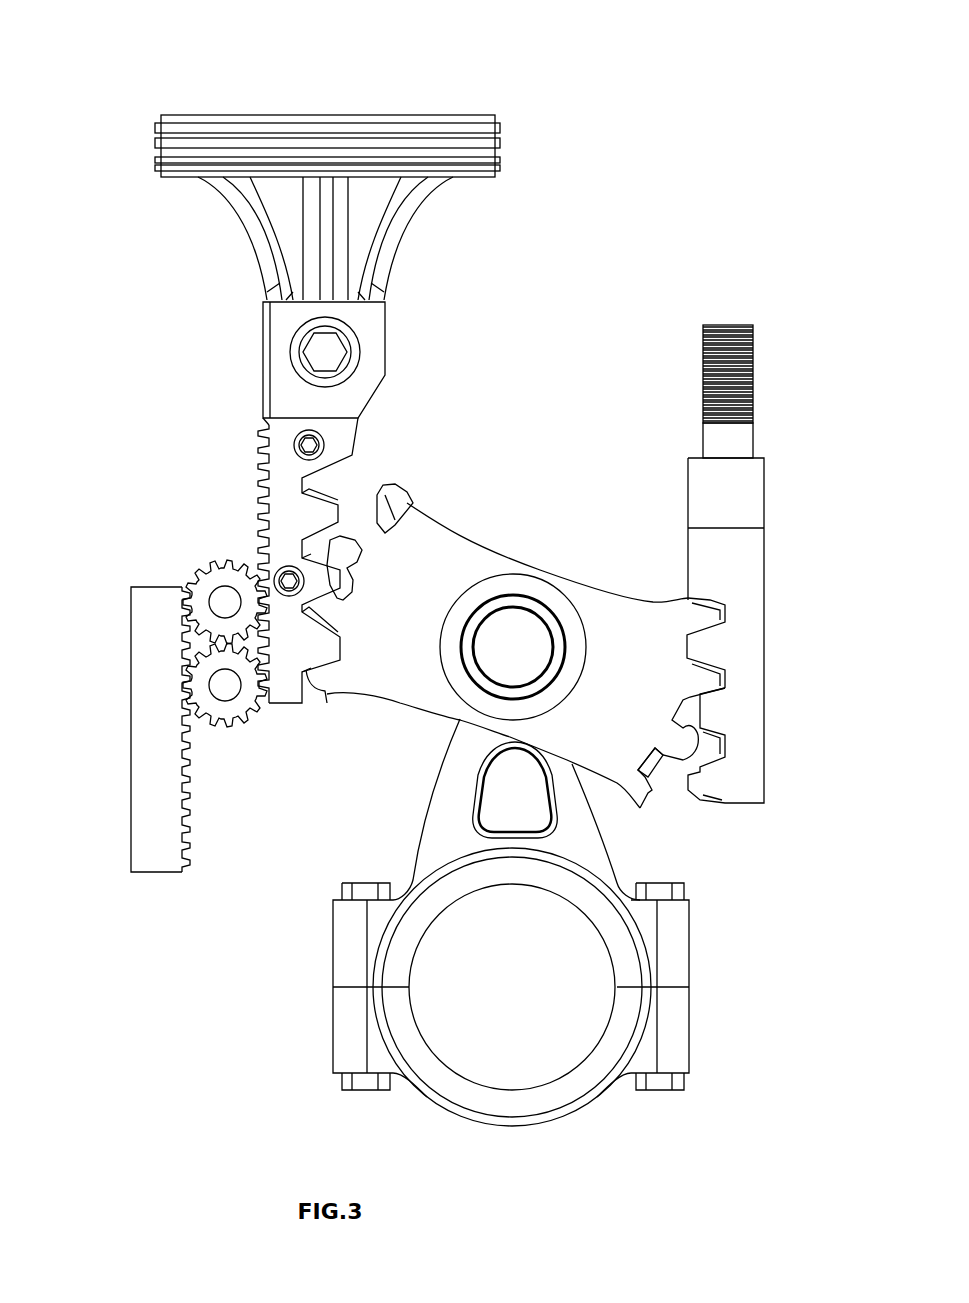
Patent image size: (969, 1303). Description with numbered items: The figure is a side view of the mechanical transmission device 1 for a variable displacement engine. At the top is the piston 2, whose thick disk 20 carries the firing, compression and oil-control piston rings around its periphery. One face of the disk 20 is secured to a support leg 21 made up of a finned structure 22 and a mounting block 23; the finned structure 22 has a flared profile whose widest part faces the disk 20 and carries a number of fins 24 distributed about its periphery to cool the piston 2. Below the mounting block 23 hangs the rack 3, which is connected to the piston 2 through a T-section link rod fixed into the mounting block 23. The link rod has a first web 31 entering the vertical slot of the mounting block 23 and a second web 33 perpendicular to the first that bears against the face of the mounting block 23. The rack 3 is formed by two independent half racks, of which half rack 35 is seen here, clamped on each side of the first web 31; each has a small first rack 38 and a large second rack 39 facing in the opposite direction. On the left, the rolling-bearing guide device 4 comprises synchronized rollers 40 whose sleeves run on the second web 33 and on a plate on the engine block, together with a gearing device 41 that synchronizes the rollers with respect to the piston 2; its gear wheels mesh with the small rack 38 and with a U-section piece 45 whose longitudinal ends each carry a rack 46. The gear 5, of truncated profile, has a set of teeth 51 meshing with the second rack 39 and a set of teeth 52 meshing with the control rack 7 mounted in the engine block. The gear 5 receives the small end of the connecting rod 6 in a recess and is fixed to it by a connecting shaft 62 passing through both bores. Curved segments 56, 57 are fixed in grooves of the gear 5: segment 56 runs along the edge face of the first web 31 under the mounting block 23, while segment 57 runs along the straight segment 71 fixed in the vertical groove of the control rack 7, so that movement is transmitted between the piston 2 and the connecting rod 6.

The mechanical transmission device 1 is at (700, 195).
The piston 2 is at (140, 101).
The rack 3 is at (237, 468).
The rolling-bearing guide device 4 is at (150, 527).
The gear 5 is at (565, 470).
The connecting rod 6 is at (710, 1022).
The control rack 7 is at (786, 456).
The thick disk 20 is at (250, 116).
The support leg 21 is at (405, 272).
The finned structure 22 is at (230, 218).
The mounting block 23 is at (372, 345).
The fins 24 is at (400, 213).
The first web 31 is at (318, 488).
The second web 33 is at (263, 323).
The half rack 35 is at (343, 433).
The first rack 38 is at (265, 430).
The second rack 39 is at (320, 648).
The synchronized rollers 40 is at (245, 740).
The gearing device 41 is at (260, 560).
The U-section piece 45 is at (160, 853).
The rack 46 is at (187, 866).
The set of teeth 51 is at (350, 560).
The set of teeth 52 is at (695, 615).
The segment 56 is at (412, 508).
The segment 57 is at (660, 765).
The connecting shaft 62 is at (520, 635).
The segment 71 is at (712, 745).